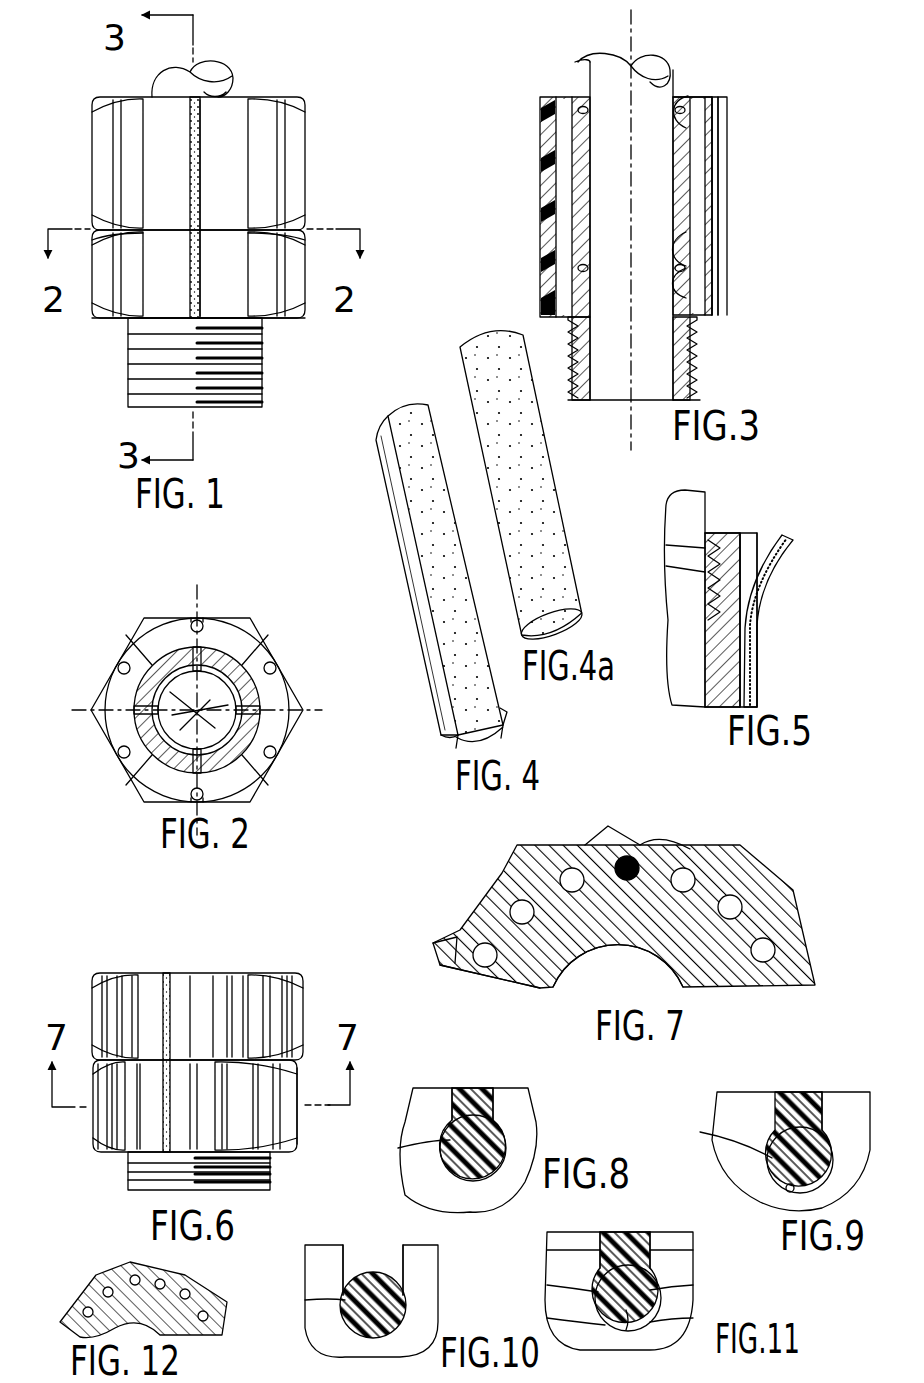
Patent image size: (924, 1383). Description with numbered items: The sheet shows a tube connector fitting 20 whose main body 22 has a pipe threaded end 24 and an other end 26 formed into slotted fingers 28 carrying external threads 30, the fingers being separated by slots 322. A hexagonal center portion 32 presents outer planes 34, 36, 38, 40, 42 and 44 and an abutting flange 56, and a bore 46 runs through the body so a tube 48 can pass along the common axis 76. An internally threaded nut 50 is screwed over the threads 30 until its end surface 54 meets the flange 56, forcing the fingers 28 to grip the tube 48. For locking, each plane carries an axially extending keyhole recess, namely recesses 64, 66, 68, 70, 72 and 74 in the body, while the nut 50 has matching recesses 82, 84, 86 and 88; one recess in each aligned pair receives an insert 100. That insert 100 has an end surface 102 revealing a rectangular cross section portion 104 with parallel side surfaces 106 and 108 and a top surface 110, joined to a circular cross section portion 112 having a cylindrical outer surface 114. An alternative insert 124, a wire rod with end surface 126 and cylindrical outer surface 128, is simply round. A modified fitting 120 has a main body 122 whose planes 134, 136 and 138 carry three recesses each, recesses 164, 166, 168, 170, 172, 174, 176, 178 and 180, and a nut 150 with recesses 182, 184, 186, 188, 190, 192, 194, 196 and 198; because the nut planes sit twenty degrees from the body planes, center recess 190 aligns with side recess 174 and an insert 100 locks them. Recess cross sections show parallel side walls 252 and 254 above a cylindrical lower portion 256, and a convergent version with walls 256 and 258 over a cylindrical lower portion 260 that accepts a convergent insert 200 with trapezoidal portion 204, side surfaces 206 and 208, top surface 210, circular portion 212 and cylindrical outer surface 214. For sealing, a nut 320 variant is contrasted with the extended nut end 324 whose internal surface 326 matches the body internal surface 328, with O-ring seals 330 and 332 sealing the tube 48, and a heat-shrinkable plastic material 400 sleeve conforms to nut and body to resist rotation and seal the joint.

In FIG. 1, the fitting 20 is at (195, 240).
In FIG. 3, the fitting 20 is at (617, 204).
In FIG. 2, the fitting 20 is at (190, 694).
In FIG. 1, the main body 22 is at (93, 320).
In FIG. 3, the main body 22 is at (568, 322).
In FIG. 1, the pipe threaded end 24 is at (191, 361).
In FIG. 3, the pipe threaded end 24 is at (700, 378).
In FIG. 3, the other end 26 is at (582, 164).
In FIG. 3, the fingers 28 is at (548, 162).
In FIG. 2, the fingers 28 is at (222, 660).
In FIG. 5, the fingers 28 is at (708, 548).
In FIG. 3, the external threads 30 is at (560, 196).
In FIG. 5, the external threads 30 is at (710, 576).
In FIG. 1, the center portion 32 is at (305, 302).
In FIG. 3, the center portion 32 is at (562, 272).
In FIG. 1, the plane 34 is at (105, 262).
In FIG. 2, the plane 34 is at (260, 620).
In FIG. 1, the plane 36 is at (222, 300).
In FIG. 2, the plane 36 is at (167, 618).
In FIG. 1, the plane 38 is at (298, 262).
In FIG. 2, the plane 38 is at (96, 702).
In FIG. 2, the plane 40 is at (130, 782).
In FIG. 2, the plane 42 is at (170, 808).
In FIG. 2, the plane 44 is at (272, 755).
In FIG. 3, the bore 46 is at (706, 276).
In FIG. 1, the tube 48 is at (230, 96).
In FIG. 3, the tube 48 is at (600, 76).
In FIG. 5, the tube 48 is at (668, 582).
In FIG. 7, the tube 48 is at (598, 968).
In FIG. 1, the nut 50 is at (92, 180).
In FIG. 3, the nut 50 is at (637, 207).
In FIG. 1, the end surface 54 is at (245, 235).
In FIG. 3, the end surface 54 is at (555, 240).
In FIG. 1, the abutting flange 56 is at (240, 232).
In FIG. 3, the abutting flange 56 is at (729, 193).
In FIG. 1, the recess 64 is at (118, 283).
In FIG. 2, the recess 64 is at (266, 660).
In FIG. 1, the recess 66 is at (190, 282).
In FIG. 3, the recess 66 is at (545, 303).
In FIG. 2, the recess 66 is at (197, 616).
In FIG. 5, the recess 66 is at (753, 640).
In FIG. 1, the recess 68 is at (280, 283).
In FIG. 2, the recess 68 is at (118, 668).
In FIG. 2, the recess 70 is at (124, 757).
In FIG. 3, the recess 72 is at (722, 308).
In FIG. 2, the recess 72 is at (202, 806).
In FIG. 2, the recess 74 is at (280, 725).
In FIG. 3, the common axis 76 is at (628, 50).
In FIG. 2, the common axis 76 is at (124, 746).
In FIG. 3, the recess 82 is at (720, 106).
In FIG. 1, the recess 84 is at (118, 205).
In FIG. 1, the recess 86 is at (190, 160).
In FIG. 5, the recess 86 is at (756, 536).
In FIG. 1, the recess 88 is at (280, 128).
In FIG. 1, the insert 100 is at (228, 170).
In FIG. 3, the insert 100 is at (540, 313).
In FIG. 2, the insert 100 is at (197, 628).
In FIG. 4, the insert 100 is at (438, 599).
In FIG. 5, the insert 100 is at (796, 621).
In FIG. 6, the insert 100 is at (173, 985).
In FIG. 8, the insert 100 is at (450, 1120).
In FIG. 9, the insert 100 is at (795, 1100).
In FIG. 4, the end surface 102 is at (473, 748).
In FIG. 4, the rectangular cross section portion 104 is at (446, 750).
In FIG. 5, the rectangular cross section portion 104 is at (772, 598).
In FIG. 4, the side surface 106 is at (442, 658).
In FIG. 4, the side surface 108 is at (508, 722).
In FIG. 4, the top surface 110 is at (444, 573).
In FIG. 5, the circular cross section portion 112 is at (780, 565).
In FIG. 9, the circular cross section portion 112 is at (740, 1150).
In FIG. 4, the cylindrical outer surface 114 is at (440, 737).
In FIG. 6, the fitting 120 is at (199, 1073).
In FIG. 12, the fitting 120 is at (202, 1282).
In FIG. 7, the main body 122 is at (523, 968).
In FIG. 6, the main body 122 is at (96, 1138).
In FIG. 4A, the insert 124 is at (540, 488).
In FIG. 10, the insert 124 is at (346, 1320).
In FIG. 4A, the end surface 126 is at (563, 622).
In FIG. 4A, the cylindrical outer surface 128 is at (545, 535).
In FIG. 6, the main body plane 134 is at (130, 1160).
In FIG. 7, the main body plane 136 is at (595, 843).
In FIG. 6, the main body plane 136 is at (156, 1156).
In FIG. 7, the main body plane 138 is at (800, 906).
In FIG. 6, the main body plane 138 is at (284, 1120).
In FIG. 7, the nut 150 is at (622, 894).
In FIG. 6, the nut 150 is at (96, 990).
In FIG. 6, the recess 164 is at (101, 1092).
In FIG. 7, the recess 166 is at (474, 958).
In FIG. 6, the recess 166 is at (108, 1116).
In FIG. 7, the recess 168 is at (510, 900).
In FIG. 6, the recess 168 is at (96, 1132).
In FIG. 7, the recess 170 is at (563, 870).
In FIG. 6, the recess 170 is at (146, 1156).
In FIG. 7, the recess 172 is at (630, 858).
In FIG. 6, the recess 172 is at (173, 1156).
In FIG. 7, the recess 174 is at (683, 868).
In FIG. 6, the recess 174 is at (202, 1158).
In FIG. 7, the recess 176 is at (732, 895).
In FIG. 6, the recess 176 is at (236, 1158).
In FIG. 7, the recess 178 is at (776, 950).
In FIG. 6, the recess 178 is at (272, 1165).
In FIG. 6, the recess 180 is at (280, 1150).
In FIG. 7, the recess 182 is at (482, 932).
In FIG. 6, the recess 182 is at (100, 1024).
In FIG. 7, the recess 184 is at (510, 898).
In FIG. 6, the recess 184 is at (118, 978).
In FIG. 7, the recess 186 is at (572, 868).
In FIG. 6, the recess 186 is at (134, 978).
In FIG. 7, the recess 188 is at (627, 856).
In FIG. 6, the recess 188 is at (192, 1000).
In FIG. 7, the recess 190 is at (720, 896).
In FIG. 6, the recess 190 is at (220, 995).
In FIG. 7, the recess 192 is at (770, 940).
In FIG. 6, the recess 192 is at (262, 1000).
In FIG. 7, the recess 194 is at (796, 932).
In FIG. 6, the recess 194 is at (268, 1005).
In FIG. 6, the recess 196 is at (284, 1010).
In FIG. 6, the recess 198 is at (294, 1020).
In FIG. 11, the insert 200 is at (619, 1278).
In FIG. 11, the trapezoidal cross section portion 204 is at (655, 1236).
In FIG. 11, the side surface 206 is at (560, 1250).
In FIG. 11, the side surface 208 is at (660, 1260).
In FIG. 11, the top surface 210 is at (616, 1232).
In FIG. 11, the circular cross section portion 212 is at (600, 1322).
In FIG. 11, the cylindrical outer surface 214 is at (660, 1316).
In FIG. 8, the side wall 252 is at (466, 1090).
In FIG. 10, the side wall 252 is at (341, 1248).
In FIG. 8, the side wall 254 is at (486, 1090).
In FIG. 10, the side wall 254 is at (404, 1258).
In FIG. 8, the cylindrical lower portion 256 is at (449, 1127).
In FIG. 9, the cylindrical lower portion 256 is at (774, 1122).
In FIG. 10, the cylindrical lower portion 256 is at (342, 1271).
In FIG. 11, the cylindrical lower portion 256 is at (598, 1292).
In FIG. 9, the convergent side wall 258 is at (822, 1100).
In FIG. 11, the convergent side wall 258 is at (662, 1290).
In FIG. 9, the cylindrical lower portion 260 is at (808, 1194).
In FIG. 11, the cylindrical lower portion 260 is at (615, 1335).
In FIG. 5, the nut 320 is at (739, 530).
In FIG. 2, the slots 322 is at (142, 615).
In FIG. 3, the nut end 324 is at (700, 100).
In FIG. 3, the internal surface 326 is at (664, 72).
In FIG. 3, the internal surface 328 is at (700, 240).
In FIG. 3, the O-ring seal 330 is at (562, 97).
In FIG. 3, the O-ring seal 332 is at (700, 322).
In FIG. 12, the heat-shrinkable plastic material 400 is at (156, 1283).